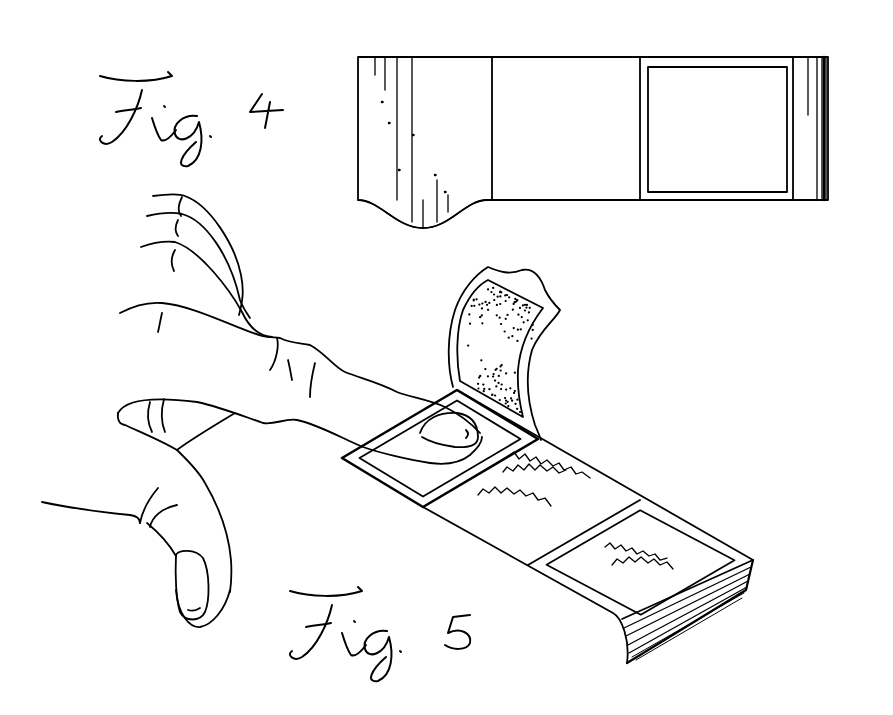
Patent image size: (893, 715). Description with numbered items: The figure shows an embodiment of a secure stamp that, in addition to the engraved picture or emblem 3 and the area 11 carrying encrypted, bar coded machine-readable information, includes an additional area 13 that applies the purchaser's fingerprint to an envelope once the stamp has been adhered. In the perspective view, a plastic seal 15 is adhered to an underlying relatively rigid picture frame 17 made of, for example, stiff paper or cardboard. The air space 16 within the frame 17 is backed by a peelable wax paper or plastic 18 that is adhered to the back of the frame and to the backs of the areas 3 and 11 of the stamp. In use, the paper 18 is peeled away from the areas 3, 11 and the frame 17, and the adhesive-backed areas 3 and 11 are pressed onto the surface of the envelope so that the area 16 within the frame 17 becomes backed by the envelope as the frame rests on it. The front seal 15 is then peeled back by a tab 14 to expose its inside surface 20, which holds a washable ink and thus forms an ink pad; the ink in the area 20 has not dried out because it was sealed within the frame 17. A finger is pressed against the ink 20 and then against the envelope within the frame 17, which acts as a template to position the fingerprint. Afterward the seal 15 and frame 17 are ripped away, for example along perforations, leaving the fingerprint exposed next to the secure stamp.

In FIG. 4, the emblem 3 is at (735, 80).
In FIG. 5, the emblem 3 is at (687, 550).
In FIG. 4, the area 11 is at (541, 60).
In FIG. 5, the area 11 is at (605, 470).
In FIG. 4, the additional area 13 is at (391, 58).
In FIG. 4, the tab 14 is at (405, 212).
In FIG. 5, the tab 14 is at (534, 340).
In FIG. 5, the plastic seal 15 is at (517, 367).
In FIG. 5, the air space 16 is at (366, 476).
In FIG. 5, the frame 17 is at (403, 487).
In FIG. 4, the peelable wax paper or plastic 18 is at (805, 195).
In FIG. 5, the peelable wax paper or plastic 18 is at (747, 583).
In FIG. 5, the inside surface 20 is at (520, 330).